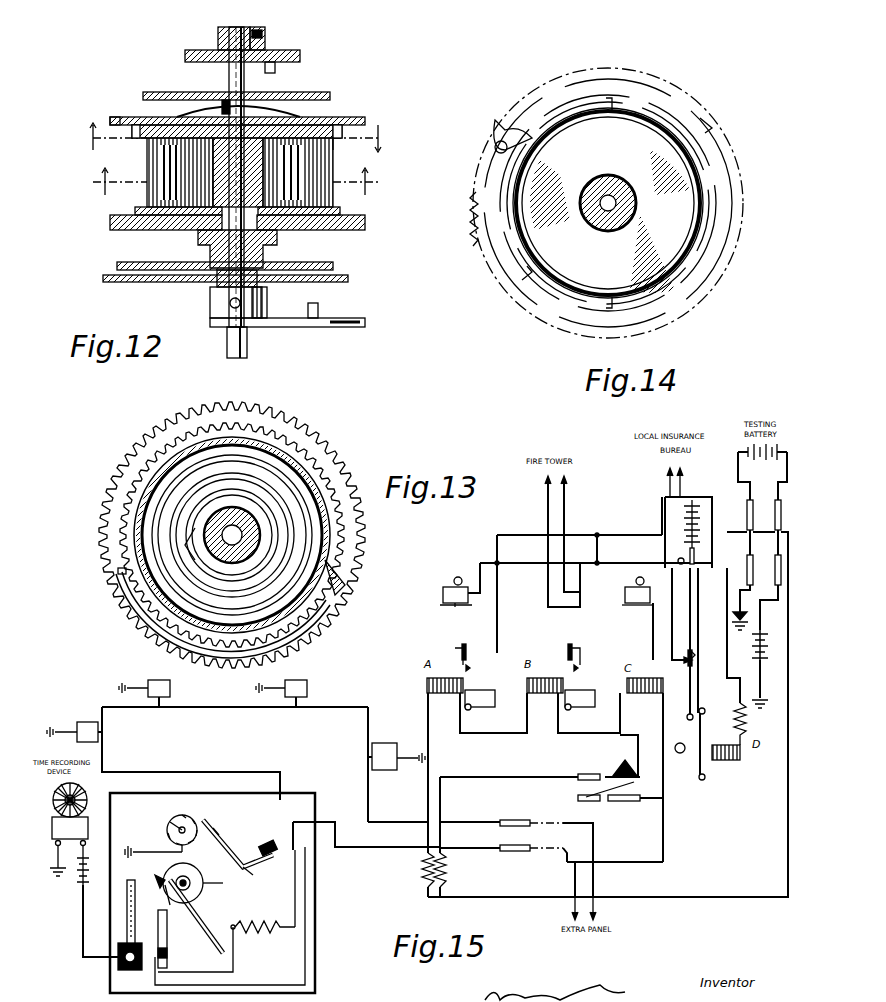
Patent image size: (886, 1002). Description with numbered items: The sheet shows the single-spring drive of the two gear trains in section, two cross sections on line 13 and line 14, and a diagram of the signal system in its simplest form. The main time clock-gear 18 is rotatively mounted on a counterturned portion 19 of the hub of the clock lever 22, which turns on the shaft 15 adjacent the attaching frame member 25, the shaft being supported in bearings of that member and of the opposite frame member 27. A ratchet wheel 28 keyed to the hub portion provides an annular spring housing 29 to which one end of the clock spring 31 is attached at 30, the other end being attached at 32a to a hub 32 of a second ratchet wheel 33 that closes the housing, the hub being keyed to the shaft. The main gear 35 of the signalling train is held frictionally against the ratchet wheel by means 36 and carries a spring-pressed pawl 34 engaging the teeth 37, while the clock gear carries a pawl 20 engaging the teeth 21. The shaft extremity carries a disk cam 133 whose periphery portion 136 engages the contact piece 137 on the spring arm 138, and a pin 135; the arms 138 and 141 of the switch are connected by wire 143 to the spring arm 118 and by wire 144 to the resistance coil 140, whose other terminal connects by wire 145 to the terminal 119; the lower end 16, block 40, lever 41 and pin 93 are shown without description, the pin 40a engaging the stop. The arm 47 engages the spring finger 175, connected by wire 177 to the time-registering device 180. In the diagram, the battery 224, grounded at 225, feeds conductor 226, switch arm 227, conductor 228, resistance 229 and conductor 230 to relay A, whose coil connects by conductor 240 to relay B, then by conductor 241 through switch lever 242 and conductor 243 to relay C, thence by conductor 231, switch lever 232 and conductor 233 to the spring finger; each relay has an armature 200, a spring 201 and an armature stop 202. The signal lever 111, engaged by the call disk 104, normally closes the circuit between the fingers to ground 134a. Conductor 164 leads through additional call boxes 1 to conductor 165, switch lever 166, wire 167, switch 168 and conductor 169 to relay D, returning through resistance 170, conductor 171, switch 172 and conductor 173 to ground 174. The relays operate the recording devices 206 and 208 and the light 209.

In FIG. 15, the call box casing 1 is at (171, 682).
In FIG. 12, the section line 13— 13 is at (229, 147).
In FIG. 12, the section line 14— 14 is at (225, 190).
In FIG. 12, the main shaft 15 is at (244, 251).
In FIG. 14, the main shaft 15 is at (612, 195).
In FIG. 13, the main shaft 15 is at (258, 556).
In FIG. 15, the main shaft 15 is at (182, 881).
In FIG. 12, the shaft lower end 16 is at (247, 349).
In FIG. 12, the main time clock-gear 18 is at (145, 230).
In FIG. 13, the main time clock-gear 18 is at (368, 529).
In FIG. 12, the counterturned portion of clock-lever hub 19 is at (290, 236).
In FIG. 13, the spring-pressed pawl 20 is at (350, 591).
In FIG. 12, the ratchet teeth 21 is at (350, 223).
In FIG. 13, the ratchet teeth 21 is at (315, 476).
In FIG. 12, the clock lever 22 is at (328, 270).
In FIG. 12, the attaching frame member 25 is at (118, 283).
In FIG. 12, the frame member 27 is at (157, 92).
In FIG. 12, the ratchet wheel 28 is at (140, 214).
In FIG. 13, the ratchet wheel 28 is at (210, 446).
In FIG. 12, the annular spring housing 29 is at (147, 166).
In FIG. 14, the annular spring housing 29 is at (608, 203).
In FIG. 13, the annular spring housing 29 is at (142, 527).
In FIG. 12, the spring attachment point 30 is at (333, 170).
In FIG. 13, the spring attachment point 30 is at (318, 544).
In FIG. 12, the clock spring 31 is at (320, 199).
In FIG. 13, the clock spring 31 is at (235, 596).
In FIG. 12, the hub of second ratchet wheel 32 is at (287, 124).
In FIG. 14, the hub of second ratchet wheel 32 is at (637, 197).
In FIG. 13, the hub of second ratchet wheel 32 is at (250, 525).
In FIG. 12, the spring attachment point 32a is at (200, 117).
In FIG. 13, the spring attachment point 32a is at (200, 560).
In FIG. 12, the second ratchet wheel 33 is at (340, 121).
In FIG. 14, the second ratchet wheel 33 is at (608, 203).
In FIG. 14, the spring-pressed pawl 34 is at (505, 135).
In FIG. 12, the main gear of signalling train 35 is at (116, 117).
In FIG. 14, the main gear of signalling train 35 is at (475, 241).
In FIG. 12, the frictional holding means 36 is at (226, 107).
In FIG. 12, the ratchet teeth 37 is at (134, 133).
In FIG. 14, the ratchet teeth 37 is at (604, 110).
In FIG. 12, the block 40 is at (300, 327).
In FIG. 12, the pin 40a is at (316, 309).
In FIG. 12, the lever 41 is at (330, 321).
In FIG. 15, the arm 47 is at (165, 905).
In FIG. 15, the pin 93 is at (172, 831).
In FIG. 15, the outer call disk 104 is at (183, 817).
In FIG. 15, the signal lever 111 is at (212, 821).
In FIG. 15, the spring arm 118 is at (262, 852).
In FIG. 15, the spring arm 119 is at (251, 882).
In FIG. 12, the disk cam 133 is at (288, 52).
In FIG. 15, the disk cam 133 is at (195, 881).
In FIG. 15, the ground 134a is at (135, 850).
In FIG. 12, the pin 135 is at (269, 60).
In FIG. 15, the pin 135 is at (203, 887).
In FIG. 12, the periphery portion of disk cam 136 is at (306, 56).
In FIG. 15, the contact piece 137 is at (158, 878).
In FIG. 15, the spring arm 138 is at (163, 918).
In FIG. 15, the resistance coil 140 is at (263, 918).
In FIG. 15, the switch arm 141 is at (167, 940).
In FIG. 15, the wire 143 is at (248, 990).
In FIG. 15, the wire 144 is at (196, 975).
In FIG. 15, the wire 145 is at (293, 892).
In FIG. 15, the main line conductor 164 is at (237, 772).
In FIG. 15, the main line conductor 165 is at (368, 800).
In FIG. 15, the switch lever 166 is at (520, 820).
In FIG. 15, the wire 167 is at (582, 793).
In FIG. 15, the switch 168 is at (635, 802).
In FIG. 15, the conductor 169 is at (680, 795).
In FIG. 15, the resistance 170 is at (748, 727).
In FIG. 15, the conductor 171 is at (732, 623).
In FIG. 15, the switch 172 is at (748, 525).
In FIG. 15, the conductor 173 is at (740, 588).
In FIG. 15, the ground 174 is at (733, 612).
In FIG. 15, the spring finger 175 is at (127, 916).
In FIG. 15, the conducting wire 177 is at (100, 958).
In FIG. 15, the time-registering device 180 is at (53, 818).
In FIG. 15, the armature 200 is at (472, 668).
In FIG. 15, the spring 201 is at (704, 668).
In FIG. 15, the armature stop 202 is at (458, 654).
In FIG. 15, the recording device 206 is at (452, 590).
In FIG. 15, the recording device 208 is at (631, 590).
In FIG. 15, the light 209 is at (686, 744).
In FIG. 15, the battery 224 is at (768, 660).
In FIG. 15, the ground 225 is at (762, 706).
In FIG. 15, the conductor 226 is at (778, 598).
In FIG. 15, the switch arm 227 is at (764, 557).
In FIG. 15, the conductor 228 is at (783, 520).
In FIG. 15, the resistance 229 is at (427, 870).
In FIG. 15, the conductor 230 is at (428, 737).
In FIG. 15, the conductor 231 is at (663, 845).
In FIG. 15, the switch lever 232 is at (527, 854).
In FIG. 15, the conductor 233 is at (373, 848).
In FIG. 15, the conductor 240 is at (508, 735).
In FIG. 15, the conductor 241 is at (590, 735).
In FIG. 15, the switch lever 242 is at (540, 768).
In FIG. 15, the conductor 243 is at (622, 722).